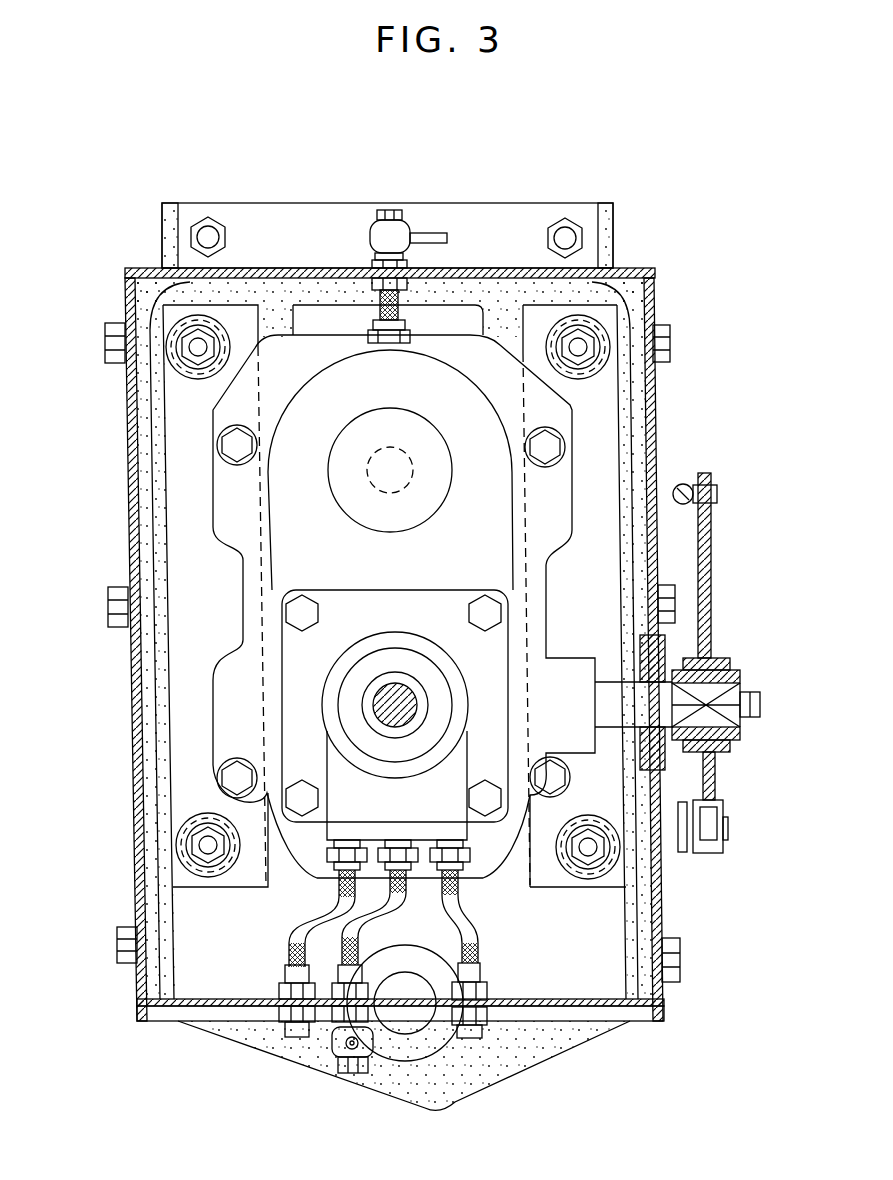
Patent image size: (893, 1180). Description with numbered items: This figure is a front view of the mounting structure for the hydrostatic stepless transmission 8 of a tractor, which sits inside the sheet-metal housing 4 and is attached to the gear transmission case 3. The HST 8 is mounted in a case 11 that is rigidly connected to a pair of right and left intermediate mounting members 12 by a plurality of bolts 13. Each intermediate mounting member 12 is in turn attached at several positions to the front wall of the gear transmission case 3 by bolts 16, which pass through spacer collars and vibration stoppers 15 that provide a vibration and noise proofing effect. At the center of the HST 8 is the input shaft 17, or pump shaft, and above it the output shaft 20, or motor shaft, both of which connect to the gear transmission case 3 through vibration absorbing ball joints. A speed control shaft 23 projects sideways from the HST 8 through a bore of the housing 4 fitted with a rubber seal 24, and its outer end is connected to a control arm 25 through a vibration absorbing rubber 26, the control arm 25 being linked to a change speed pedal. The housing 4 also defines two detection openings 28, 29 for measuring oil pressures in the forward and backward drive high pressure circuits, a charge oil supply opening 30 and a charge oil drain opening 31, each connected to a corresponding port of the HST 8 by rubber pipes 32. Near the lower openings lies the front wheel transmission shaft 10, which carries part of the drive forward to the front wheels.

The gear transmission case 3 is at (202, 1037).
The housing 4 is at (128, 707).
The hydrostatic stepless transmission 8 is at (262, 588).
The front wheel transmission shaft 10 is at (405, 990).
The case 11 is at (500, 552).
The intermediate mounting members 12 is at (190, 546).
The bolts 13 is at (237, 449).
The resilient bushing 15 is at (190, 382).
The bolts 16 is at (198, 347).
The input shaft 17 is at (395, 700).
The output shaft 20 is at (380, 492).
The speed control shaft 23 is at (606, 693).
The rubber seal 24 is at (673, 658).
The control arm 25 is at (712, 556).
The vibration absorbing rubber 26 is at (737, 740).
The detection opening 28 is at (293, 1010).
The detection opening 29 is at (490, 1007).
The charge oil supply opening 30 is at (332, 1047).
The charge oil drain opening 31 is at (375, 238).
The rubber pipes 32 is at (400, 298).